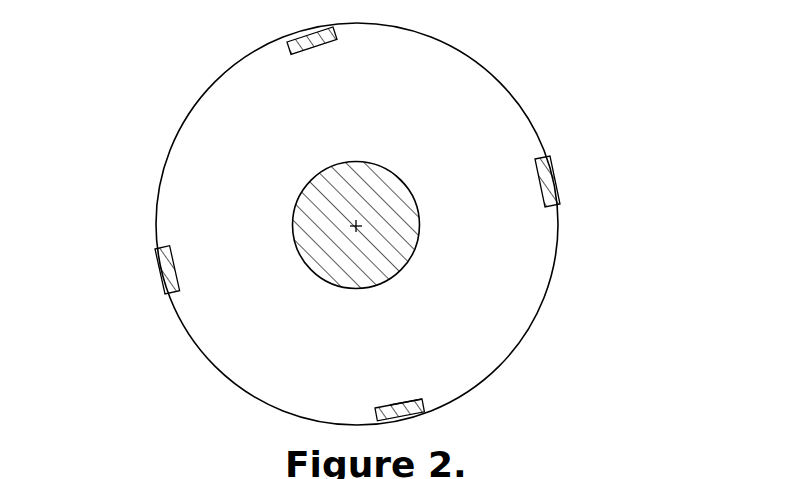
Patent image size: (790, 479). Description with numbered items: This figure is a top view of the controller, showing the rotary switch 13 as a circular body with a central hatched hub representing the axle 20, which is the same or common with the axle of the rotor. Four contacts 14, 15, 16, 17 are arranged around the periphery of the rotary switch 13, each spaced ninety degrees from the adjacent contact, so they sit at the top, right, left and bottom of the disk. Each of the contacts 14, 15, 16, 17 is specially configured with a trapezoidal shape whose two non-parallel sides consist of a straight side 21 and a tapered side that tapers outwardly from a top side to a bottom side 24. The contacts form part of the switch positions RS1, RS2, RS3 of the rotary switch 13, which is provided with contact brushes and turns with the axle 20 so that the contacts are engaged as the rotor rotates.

The rotary switch 13 is at (489, 72).
The contact 14 is at (556, 181).
The contact 15 is at (426, 406).
The contact 16 is at (155, 264).
The contact 17 is at (288, 43).
The axle 20 is at (398, 258).
The bottom side 24 is at (403, 402).
The straight side 21 is at (116, 467).